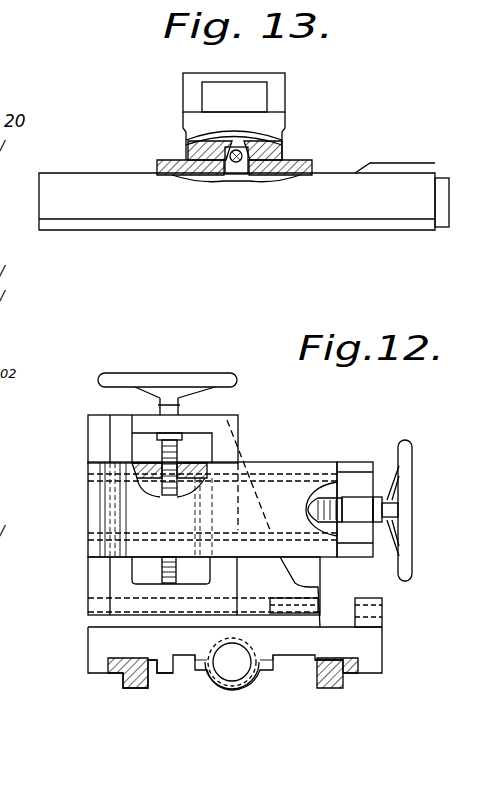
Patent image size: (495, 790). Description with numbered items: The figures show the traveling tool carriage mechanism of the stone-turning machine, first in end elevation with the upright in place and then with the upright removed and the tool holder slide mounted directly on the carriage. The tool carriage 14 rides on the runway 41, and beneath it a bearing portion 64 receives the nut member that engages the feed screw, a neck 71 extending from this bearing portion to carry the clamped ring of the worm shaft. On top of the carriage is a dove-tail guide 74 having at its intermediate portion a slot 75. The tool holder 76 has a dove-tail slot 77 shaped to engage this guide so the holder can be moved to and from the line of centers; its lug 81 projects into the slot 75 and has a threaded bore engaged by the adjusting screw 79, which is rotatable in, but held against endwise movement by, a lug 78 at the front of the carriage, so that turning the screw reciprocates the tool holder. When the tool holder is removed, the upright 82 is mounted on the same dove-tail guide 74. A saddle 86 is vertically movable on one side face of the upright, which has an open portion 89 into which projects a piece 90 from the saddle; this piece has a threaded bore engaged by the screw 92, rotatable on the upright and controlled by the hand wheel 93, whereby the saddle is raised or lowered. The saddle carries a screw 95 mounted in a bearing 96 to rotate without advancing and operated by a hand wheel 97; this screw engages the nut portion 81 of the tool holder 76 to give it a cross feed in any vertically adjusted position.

In FIG. 13, the tool carriage 14 is at (88, 180).
In FIG. 12, the tool carriage 14 is at (88, 640).
In FIG. 13, the tool holder 76 is at (281, 124).
In FIG. 12, the tool holder 76 is at (260, 470).
In FIG. 13, the dove-tail slot 77 is at (188, 157).
In FIG. 13, the adjusting screw 79 is at (284, 152).
In FIG. 13, the dove-tail guide 74 is at (215, 180).
In FIG. 13, the slot 75 is at (242, 176).
In FIG. 13, the lug 81 is at (233, 170).
In FIG. 12, the hand wheel 93 is at (210, 380).
In FIG. 12, the screw 92 is at (178, 440).
In FIG. 12, the open portion 89 is at (140, 444).
In FIG. 12, the piece 90 is at (240, 458).
In FIG. 12, the saddle 86 is at (360, 548).
In FIG. 12, the screw 95 is at (330, 503).
In FIG. 12, the bearing 96 is at (361, 502).
In FIG. 12, the hand wheel 97 is at (405, 497).
In FIG. 12, the upright 82 is at (292, 572).
In FIG. 12, the lug 78 is at (382, 606).
In FIG. 12, the neck 71 is at (228, 670).
In FIG. 12, the bearing portion 64 is at (238, 676).
In FIG. 12, the runway 41 is at (150, 690).